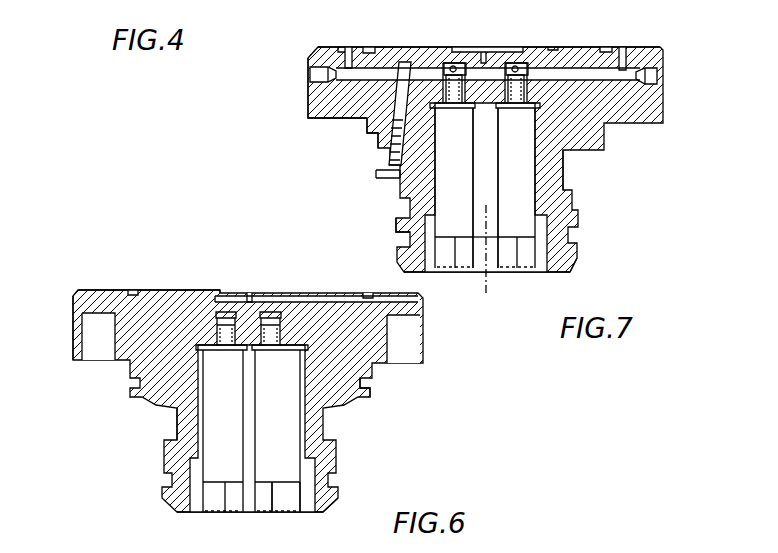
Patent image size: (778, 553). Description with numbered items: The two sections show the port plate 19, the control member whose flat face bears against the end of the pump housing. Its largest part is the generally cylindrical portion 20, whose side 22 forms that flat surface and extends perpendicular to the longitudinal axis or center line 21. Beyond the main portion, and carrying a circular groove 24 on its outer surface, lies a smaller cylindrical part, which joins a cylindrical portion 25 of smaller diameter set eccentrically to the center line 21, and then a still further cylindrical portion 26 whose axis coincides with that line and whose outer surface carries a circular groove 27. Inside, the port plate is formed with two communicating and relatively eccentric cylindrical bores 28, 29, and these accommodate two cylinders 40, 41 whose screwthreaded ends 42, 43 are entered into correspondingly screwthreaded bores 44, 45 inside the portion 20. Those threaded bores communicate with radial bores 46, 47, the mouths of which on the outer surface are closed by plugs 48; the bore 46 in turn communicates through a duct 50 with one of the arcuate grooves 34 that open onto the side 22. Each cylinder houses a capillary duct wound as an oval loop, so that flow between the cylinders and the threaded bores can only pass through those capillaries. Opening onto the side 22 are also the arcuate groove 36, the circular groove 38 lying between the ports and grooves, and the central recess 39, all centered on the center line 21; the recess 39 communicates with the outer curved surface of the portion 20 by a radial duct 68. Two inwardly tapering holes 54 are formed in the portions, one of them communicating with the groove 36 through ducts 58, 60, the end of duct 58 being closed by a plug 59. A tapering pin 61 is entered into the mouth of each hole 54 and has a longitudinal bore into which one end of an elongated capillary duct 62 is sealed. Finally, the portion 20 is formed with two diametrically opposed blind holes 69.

In FIG. 7, the port plate 19 is at (310, 120).
In FIG. 6, the port plate 19 is at (91, 281).
In FIG. 7, the generally cylindrical portion 20 is at (664, 100).
In FIG. 6, the generally cylindrical portion 20 is at (425, 316).
In FIG. 7, the center line 21 is at (489, 290).
In FIG. 7, the side 22 is at (582, 47).
In FIG. 6, the side 22 is at (185, 290).
In FIG. 7, the circular groove 24 is at (372, 138).
In FIG. 6, the circular groove 24 is at (371, 392).
In FIG. 7, the cylindrical portion 25 is at (556, 186).
In FIG. 6, the cylindrical portion 25 is at (178, 416).
In FIG. 7, the cylindrical portion 26 is at (572, 264).
In FIG. 6, the cylindrical portion 26 is at (340, 506).
In FIG. 7, the circular groove 27 is at (405, 240).
In FIG. 6, the cylindrical bore 28 is at (303, 503).
In FIG. 6, the cylindrical bore 29 is at (248, 406).
In FIG. 7, the arcuately curved groove 34 is at (640, 47).
In FIG. 7, the arcuately curved groove 36 is at (338, 47).
In FIG. 7, the circular groove 38 is at (371, 47).
In FIG. 6, the circular groove 38 is at (133, 290).
In FIG. 6, the central recess 39 is at (248, 293).
In FIG. 7, the cylinder 40 is at (512, 173).
In FIG. 6, the cylinder 40 is at (258, 448).
In FIG. 7, the cylinder 41 is at (460, 142).
In FIG. 6, the cylinder 41 is at (238, 386).
In FIG. 7, the screwthreaded end 42 is at (518, 185).
In FIG. 7, the screwthreaded end 43 is at (452, 185).
In FIG. 7, the screwthreaded bore 44 is at (515, 62).
In FIG. 7, the screwthreaded bore 45 is at (485, 55).
In FIG. 7, the bore 46 is at (553, 48).
In FIG. 7, the bore 47 is at (468, 63).
In FIG. 7, the plug 48 is at (658, 77).
In FIG. 7, the duct 50 is at (623, 47).
In FIG. 7, the inwardly tapering hole 54 is at (457, 50).
In FIG. 7, the duct 58 is at (403, 62).
In FIG. 7, the plug 59 is at (310, 75).
In FIG. 7, the duct 60 is at (350, 50).
In FIG. 7, the tapering pin 61 is at (388, 164).
In FIG. 7, the capillary duct 62 is at (384, 180).
In FIG. 6, the radial duct 68 is at (310, 297).
In FIG. 6, the blind hole 69 is at (98, 356).